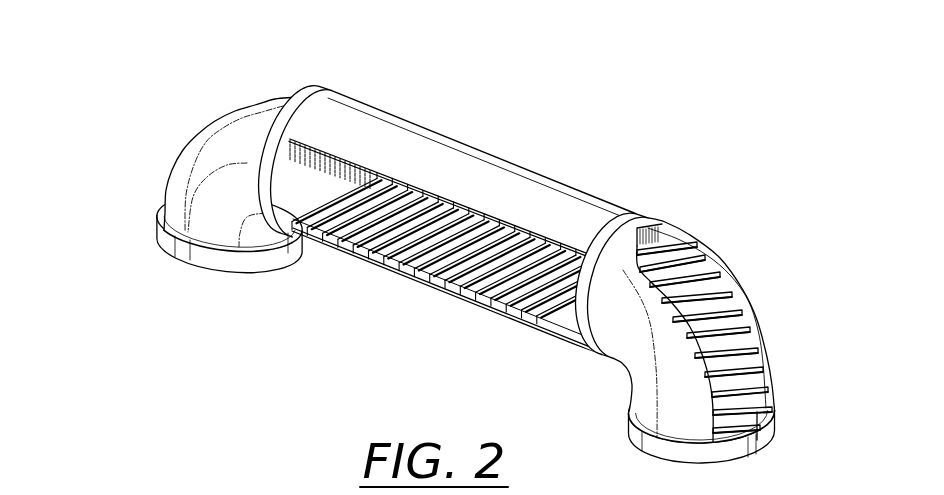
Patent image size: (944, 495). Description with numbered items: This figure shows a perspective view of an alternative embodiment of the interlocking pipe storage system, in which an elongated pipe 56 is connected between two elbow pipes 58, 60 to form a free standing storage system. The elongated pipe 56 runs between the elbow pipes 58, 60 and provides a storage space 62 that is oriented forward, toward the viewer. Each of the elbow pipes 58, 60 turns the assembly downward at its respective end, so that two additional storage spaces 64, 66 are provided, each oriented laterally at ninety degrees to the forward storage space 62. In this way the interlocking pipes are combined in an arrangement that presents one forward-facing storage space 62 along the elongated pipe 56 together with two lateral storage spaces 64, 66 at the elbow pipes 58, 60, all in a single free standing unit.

The elongated pipe 56 is at (517, 170).
The elbow pipe 58 is at (170, 173).
The elbow pipe 60 is at (728, 252).
The storage space 62 is at (432, 277).
The storage space 64 is at (751, 338).
The storage space 66 is at (243, 115).